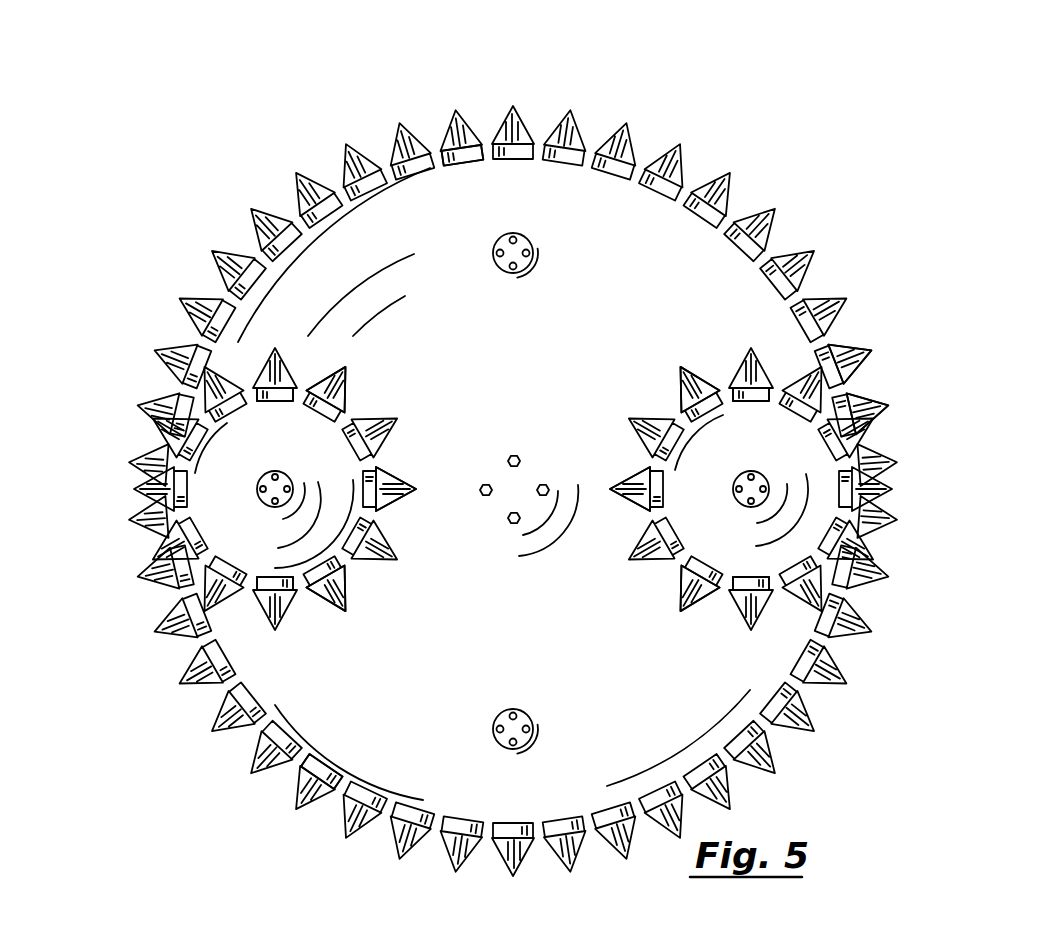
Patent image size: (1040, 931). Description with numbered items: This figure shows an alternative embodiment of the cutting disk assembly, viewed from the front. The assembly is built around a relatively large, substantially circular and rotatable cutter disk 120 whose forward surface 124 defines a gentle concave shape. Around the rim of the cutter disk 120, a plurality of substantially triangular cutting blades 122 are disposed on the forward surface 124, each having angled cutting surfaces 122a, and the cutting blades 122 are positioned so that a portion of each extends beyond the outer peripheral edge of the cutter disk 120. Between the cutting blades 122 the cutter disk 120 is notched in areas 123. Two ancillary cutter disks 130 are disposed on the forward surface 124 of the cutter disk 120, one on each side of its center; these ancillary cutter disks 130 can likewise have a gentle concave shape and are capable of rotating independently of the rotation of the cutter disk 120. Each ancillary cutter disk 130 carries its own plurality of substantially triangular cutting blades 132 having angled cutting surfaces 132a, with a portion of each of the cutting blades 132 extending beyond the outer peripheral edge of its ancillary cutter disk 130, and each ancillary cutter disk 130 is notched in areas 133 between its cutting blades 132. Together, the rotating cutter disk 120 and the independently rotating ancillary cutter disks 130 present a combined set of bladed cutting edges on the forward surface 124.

The cutter disk 120 is at (735, 297).
The cutting blades 122 is at (290, 224).
The angled cutting surfaces 122a is at (848, 348).
The notched areas 123 is at (440, 157).
The forward surface 124 is at (626, 248).
The ancillary cutter disks 130 is at (220, 512).
The cutting blades 132 is at (350, 393).
The angled cutting surfaces 132a is at (408, 530).
The notched areas 133 is at (302, 383).